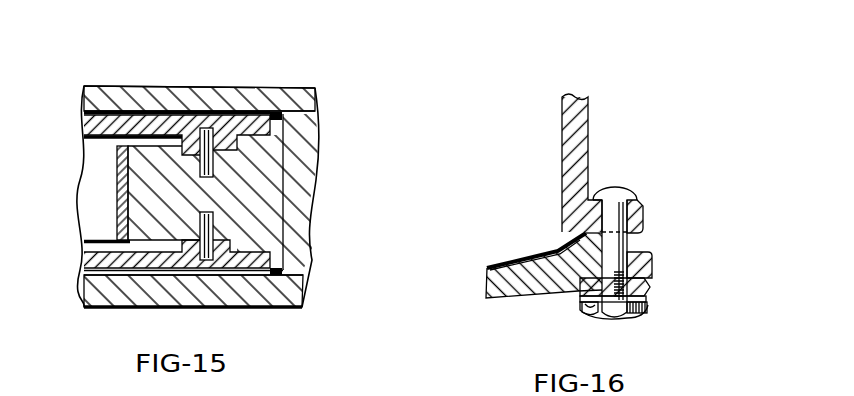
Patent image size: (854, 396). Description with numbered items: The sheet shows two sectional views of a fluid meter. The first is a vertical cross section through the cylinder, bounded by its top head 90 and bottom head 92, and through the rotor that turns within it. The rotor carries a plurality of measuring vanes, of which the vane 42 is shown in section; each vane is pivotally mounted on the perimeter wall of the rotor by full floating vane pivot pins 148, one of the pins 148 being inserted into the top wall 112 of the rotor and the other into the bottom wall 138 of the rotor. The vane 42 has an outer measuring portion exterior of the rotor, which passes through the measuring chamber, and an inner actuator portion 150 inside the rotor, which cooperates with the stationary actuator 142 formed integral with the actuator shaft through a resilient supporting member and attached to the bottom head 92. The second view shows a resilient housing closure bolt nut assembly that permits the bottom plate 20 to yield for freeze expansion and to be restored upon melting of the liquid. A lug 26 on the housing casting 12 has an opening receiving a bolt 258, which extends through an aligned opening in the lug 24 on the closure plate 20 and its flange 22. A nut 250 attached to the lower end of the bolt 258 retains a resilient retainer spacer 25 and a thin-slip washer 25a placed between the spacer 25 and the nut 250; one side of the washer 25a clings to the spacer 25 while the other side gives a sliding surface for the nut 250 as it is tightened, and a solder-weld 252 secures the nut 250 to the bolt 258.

In FIG. 15, the top head 90 is at (262, 100).
In FIG. 15, the bottom head 92 is at (267, 295).
In FIG. 15, the top wall of the rotor 112 is at (148, 128).
In FIG. 15, the bottom wall of the rotor 138 is at (120, 286).
In FIG. 15, the stationary actuator 142 is at (125, 180).
In FIG. 15, the full floating vane pivot pins 148 is at (204, 152).
In FIG. 15, the inner actuator portion 150 is at (152, 213).
In FIG. 15, the measuring vane 42 is at (268, 194).
In FIG. 16, the housing casting 12 is at (577, 127).
In FIG. 16, the bottom plate 20 is at (520, 286).
In FIG. 16, the bracket flange 22 is at (520, 272).
In FIG. 16, the lug 24 is at (652, 266).
In FIG. 16, the resilient retainer spacer 25 is at (650, 292).
In FIG. 16, the thin-slip washer 25a is at (650, 306).
In FIG. 16, the lug 26 is at (643, 213).
In FIG. 16, the nut 250 is at (592, 311).
In FIG. 16, the solder-weld 252 is at (636, 319).
In FIG. 16, the bolt 258 is at (613, 322).